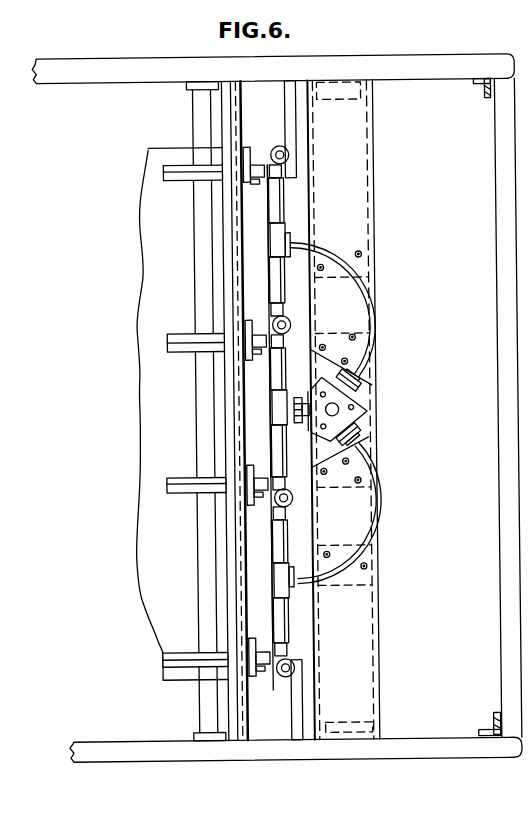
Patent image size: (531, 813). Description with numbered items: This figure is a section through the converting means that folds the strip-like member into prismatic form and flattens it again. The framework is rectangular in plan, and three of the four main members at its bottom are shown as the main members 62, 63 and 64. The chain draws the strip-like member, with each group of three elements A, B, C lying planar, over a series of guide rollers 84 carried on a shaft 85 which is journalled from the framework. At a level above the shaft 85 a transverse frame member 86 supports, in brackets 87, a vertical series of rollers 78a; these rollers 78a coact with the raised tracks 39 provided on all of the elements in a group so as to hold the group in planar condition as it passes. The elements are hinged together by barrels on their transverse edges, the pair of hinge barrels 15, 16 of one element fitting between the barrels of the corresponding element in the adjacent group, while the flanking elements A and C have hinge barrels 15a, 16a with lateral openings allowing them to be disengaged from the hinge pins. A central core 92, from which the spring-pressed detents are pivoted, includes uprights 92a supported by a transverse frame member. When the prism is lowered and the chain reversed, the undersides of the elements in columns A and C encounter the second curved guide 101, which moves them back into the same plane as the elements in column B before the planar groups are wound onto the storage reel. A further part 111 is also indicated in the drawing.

The main member 64 is at (413, 57).
The main member 62 is at (425, 745).
The main member 63 is at (497, 487).
The mounting clips 111 is at (489, 93).
The shaft 85 is at (196, 113).
The transverse frame member 86 is at (226, 236).
The guide roller 84 is at (178, 180).
The bracket 87 is at (250, 148).
The roller 78a is at (268, 172).
The raised track 39 is at (271, 308).
The hinge barrel 15a is at (287, 198).
The hinge barrel 16a is at (284, 287).
The hinge barrel 15 is at (272, 376).
The hinge barrel 16 is at (272, 450).
The second curved guide 101 is at (328, 250).
The central core 92 is at (346, 409).
The upright 92a is at (359, 425).
The element A is at (253, 208).
The element B is at (250, 406).
The element C is at (258, 570).